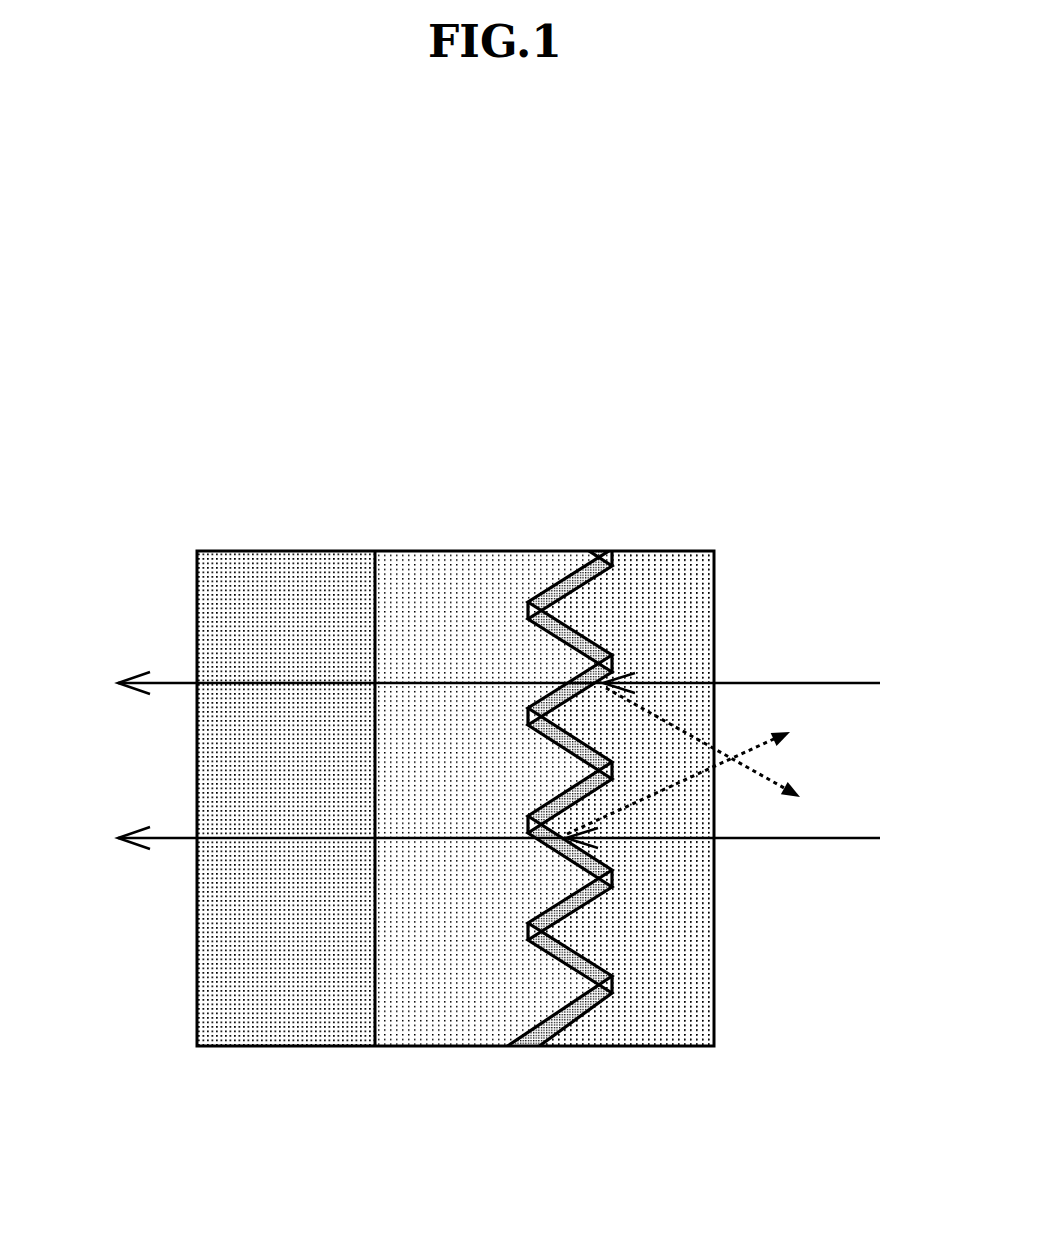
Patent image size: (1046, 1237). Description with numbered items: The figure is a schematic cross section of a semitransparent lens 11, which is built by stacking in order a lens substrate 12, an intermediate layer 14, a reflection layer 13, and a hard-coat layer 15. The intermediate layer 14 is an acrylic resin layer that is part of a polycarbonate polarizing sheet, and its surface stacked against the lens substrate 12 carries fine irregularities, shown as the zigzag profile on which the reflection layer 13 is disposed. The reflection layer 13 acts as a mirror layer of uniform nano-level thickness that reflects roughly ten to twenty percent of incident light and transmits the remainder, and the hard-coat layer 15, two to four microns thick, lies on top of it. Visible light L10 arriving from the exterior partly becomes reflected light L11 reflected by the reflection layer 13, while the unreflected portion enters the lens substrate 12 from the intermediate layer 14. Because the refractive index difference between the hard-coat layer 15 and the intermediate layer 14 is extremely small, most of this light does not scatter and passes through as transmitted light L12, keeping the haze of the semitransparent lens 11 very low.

The semitransparent lens 11 is at (312, 390).
The lens substrate 12 is at (253, 580).
The reflection layer 13 is at (600, 537).
The intermediate layer 14 is at (458, 582).
The hard-coat layer 15 is at (672, 582).
The visible light L10 is at (754, 761).
The reflected light L11 is at (715, 761).
The transmitted light L12 is at (326, 761).